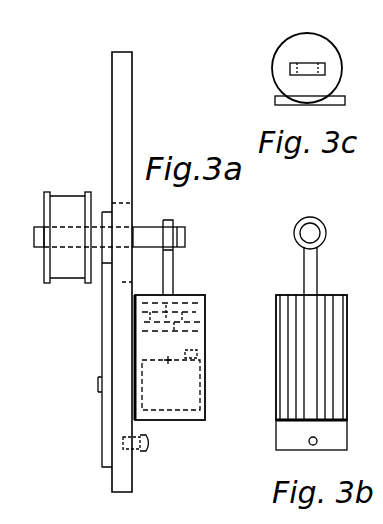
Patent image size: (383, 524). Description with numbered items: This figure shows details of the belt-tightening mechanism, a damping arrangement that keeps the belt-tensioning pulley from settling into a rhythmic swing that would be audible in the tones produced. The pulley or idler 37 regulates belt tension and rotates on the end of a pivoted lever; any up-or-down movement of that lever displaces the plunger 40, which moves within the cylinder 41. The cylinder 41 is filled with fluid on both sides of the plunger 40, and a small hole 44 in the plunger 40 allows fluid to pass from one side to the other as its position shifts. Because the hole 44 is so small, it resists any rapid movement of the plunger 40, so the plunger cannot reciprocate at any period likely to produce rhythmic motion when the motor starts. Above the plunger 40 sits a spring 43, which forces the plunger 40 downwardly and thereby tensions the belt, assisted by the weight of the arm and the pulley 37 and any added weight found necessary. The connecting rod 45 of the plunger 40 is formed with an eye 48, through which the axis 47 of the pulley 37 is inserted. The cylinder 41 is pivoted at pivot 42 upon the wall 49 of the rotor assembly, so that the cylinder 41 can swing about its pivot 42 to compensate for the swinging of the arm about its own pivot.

In FIG. 3A, the pulley or idler 37 is at (64, 281).
In FIG. 3A, the plunger 40 is at (170, 357).
In FIG. 3A, the cylinder 41 is at (276, 398).
In FIG. 3B, the cylinder 41 is at (276, 398).
In FIG. 3A, the pivot 42 is at (149, 443).
In FIG. 3A, the spring 43 is at (198, 313).
In FIG. 3A, the small hole 44 is at (196, 354).
In FIG. 3A, the connecting rod 45 is at (173, 270).
In FIG. 3B, the connecting rod 45 is at (304, 268).
In FIG. 3A, the axis 47 is at (38, 227).
In FIG. 3B, the eye 48 is at (326, 226).
In FIG. 3A, the wall 49 is at (132, 98).